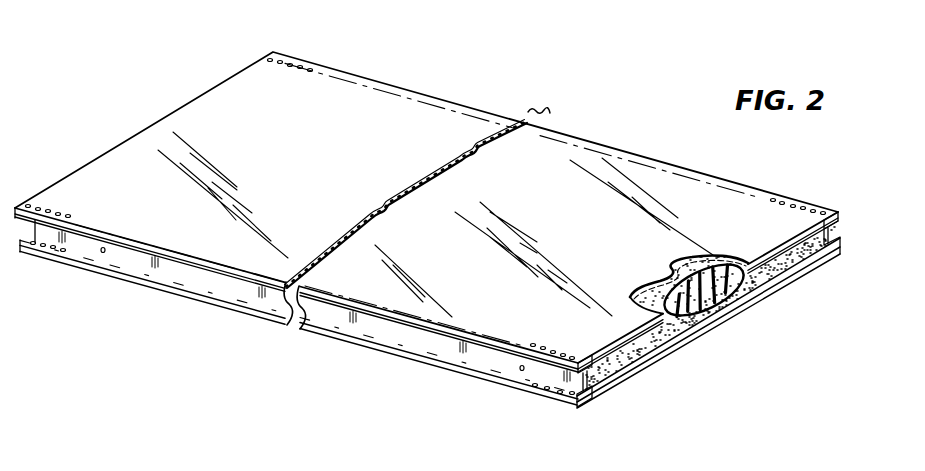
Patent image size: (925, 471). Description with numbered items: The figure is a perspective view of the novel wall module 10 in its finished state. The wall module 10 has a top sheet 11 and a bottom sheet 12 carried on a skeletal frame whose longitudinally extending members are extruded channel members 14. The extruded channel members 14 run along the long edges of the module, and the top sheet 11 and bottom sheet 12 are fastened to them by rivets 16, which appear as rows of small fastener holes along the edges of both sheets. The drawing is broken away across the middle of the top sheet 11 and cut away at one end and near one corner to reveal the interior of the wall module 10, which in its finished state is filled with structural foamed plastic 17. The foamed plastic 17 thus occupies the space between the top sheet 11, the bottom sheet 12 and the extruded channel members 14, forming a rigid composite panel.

The wall module 10 is at (490, 47).
The top sheet 11 is at (309, 176).
The bottom sheet 12 is at (637, 372).
The extruded channel member 14 is at (830, 232).
The rivets 16 is at (70, 217).
The structural foamed plastic 17 is at (786, 268).